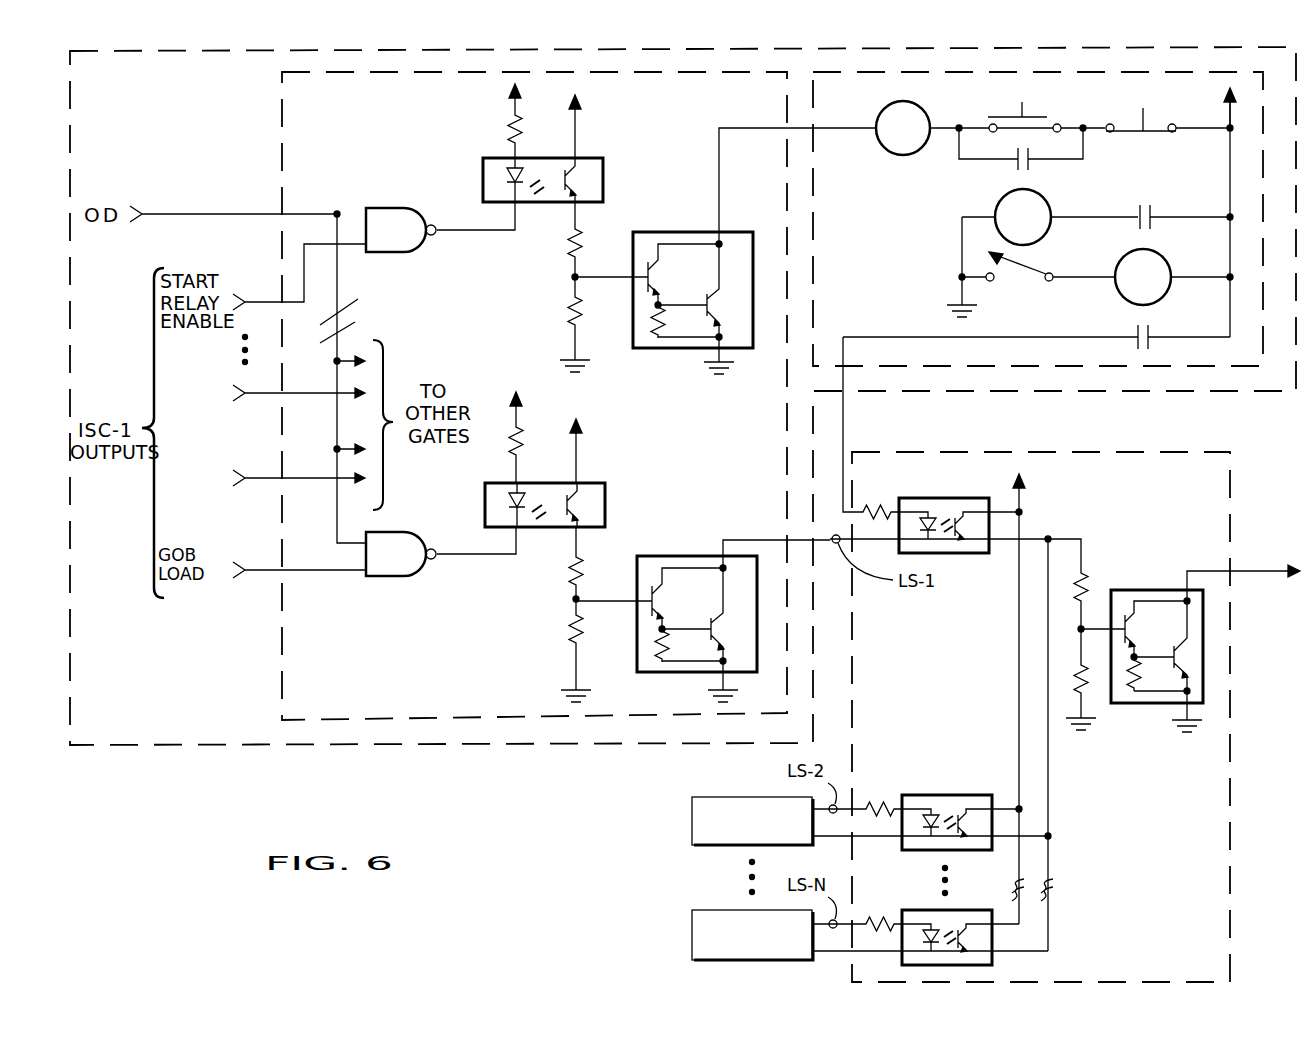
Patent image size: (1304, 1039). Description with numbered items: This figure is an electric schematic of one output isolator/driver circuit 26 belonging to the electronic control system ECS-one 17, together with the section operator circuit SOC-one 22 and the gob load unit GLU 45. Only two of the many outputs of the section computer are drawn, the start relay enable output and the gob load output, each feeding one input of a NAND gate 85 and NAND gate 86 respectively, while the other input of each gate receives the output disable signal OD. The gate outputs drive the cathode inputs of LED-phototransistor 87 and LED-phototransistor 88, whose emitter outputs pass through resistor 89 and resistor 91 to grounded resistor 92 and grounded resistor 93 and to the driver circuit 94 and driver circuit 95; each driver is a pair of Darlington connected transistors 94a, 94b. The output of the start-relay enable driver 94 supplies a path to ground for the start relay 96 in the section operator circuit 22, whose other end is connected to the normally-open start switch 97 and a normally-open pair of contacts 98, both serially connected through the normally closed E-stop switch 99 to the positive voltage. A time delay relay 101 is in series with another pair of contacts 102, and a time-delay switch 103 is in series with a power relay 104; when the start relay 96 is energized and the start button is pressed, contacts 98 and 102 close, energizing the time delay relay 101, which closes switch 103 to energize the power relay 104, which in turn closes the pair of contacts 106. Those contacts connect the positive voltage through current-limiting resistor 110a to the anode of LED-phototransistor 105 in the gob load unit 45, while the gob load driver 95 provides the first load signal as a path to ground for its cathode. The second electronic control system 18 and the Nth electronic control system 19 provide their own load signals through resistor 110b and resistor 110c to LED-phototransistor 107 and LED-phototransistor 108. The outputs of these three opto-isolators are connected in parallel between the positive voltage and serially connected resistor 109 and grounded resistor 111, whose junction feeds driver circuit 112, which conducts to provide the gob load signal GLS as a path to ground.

The electronic control system ECS-1 17 is at (166, 701).
The electronic control system ECS-2 18 is at (690, 826).
The electronic control system ECS-N 19 is at (690, 939).
The section operator circuit SOC-1 22 is at (902, 282).
The output isolator/driver circuit 26 is at (388, 175).
The gob load unit GLU 45 is at (1152, 902).
The NAND gate 85 is at (408, 252).
The NAND gate 86 is at (400, 578).
The LED-phototransistor 87 is at (603, 172).
The LED-phototransistor 88 is at (607, 501).
The resistor 89 is at (566, 246).
The resistor 91 is at (568, 582).
The grounded resistor 92 is at (567, 306).
The grounded resistor 93 is at (567, 636).
The driver circuit 94 is at (652, 232).
The Darlington connected transistor 94a is at (645, 308).
The Darlington connected transistor 94b is at (702, 318).
The driver circuit 95 is at (655, 556).
The start relay 96 is at (889, 106).
The start switch 97 is at (1048, 118).
The pair of contacts 98 is at (1016, 163).
The E-stop switch 99 is at (1143, 121).
The time delay relay 101 is at (1051, 229).
The pair of contacts 102 is at (1156, 227).
The time-delay switch 103 is at (1042, 284).
The power relay 104 is at (1170, 292).
The LED-phototransistor 105 is at (965, 499).
The pair of contacts 106 is at (1153, 345).
The LED-phototransistor 107 is at (965, 795).
The LED-phototransistor 108 is at (993, 962).
The resistor 109 is at (1085, 579).
The current-limiting resistor 110a is at (881, 507).
The resistor 110b is at (879, 800).
The resistor 110c is at (879, 915).
The resistor 111 is at (1088, 690).
The driver circuit 112 is at (1160, 704).